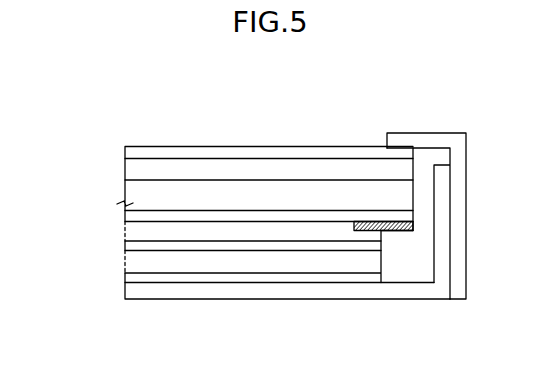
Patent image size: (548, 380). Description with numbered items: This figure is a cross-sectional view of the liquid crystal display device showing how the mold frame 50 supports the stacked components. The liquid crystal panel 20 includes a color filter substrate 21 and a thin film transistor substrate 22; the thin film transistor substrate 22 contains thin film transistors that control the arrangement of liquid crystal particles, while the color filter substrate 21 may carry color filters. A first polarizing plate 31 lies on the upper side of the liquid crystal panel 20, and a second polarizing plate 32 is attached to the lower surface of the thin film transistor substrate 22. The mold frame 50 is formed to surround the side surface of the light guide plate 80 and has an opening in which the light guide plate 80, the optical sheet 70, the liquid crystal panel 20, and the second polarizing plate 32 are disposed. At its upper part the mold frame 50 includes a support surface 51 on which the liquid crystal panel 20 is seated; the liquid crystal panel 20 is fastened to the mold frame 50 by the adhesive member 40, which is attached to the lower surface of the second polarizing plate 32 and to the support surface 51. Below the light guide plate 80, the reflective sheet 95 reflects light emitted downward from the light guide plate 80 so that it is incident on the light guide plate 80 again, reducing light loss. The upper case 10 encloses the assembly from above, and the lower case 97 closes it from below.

The upper case 10 is at (427, 138).
The liquid crystal panel 20 is at (67, 174).
The color filter substrate 21 is at (130, 169).
The thin film transistor substrate 22 is at (131, 197).
The first polarizing plate 31 is at (129, 153).
The second polarizing plate 32 is at (129, 216).
The adhesive member 40 is at (415, 228).
The mold frame 50 is at (427, 258).
The support surface 51 is at (393, 232).
The optical sheet 70 is at (129, 245).
The light guide plate 80 is at (192, 263).
The reflective sheet 95 is at (308, 278).
The lower case 97 is at (247, 290).